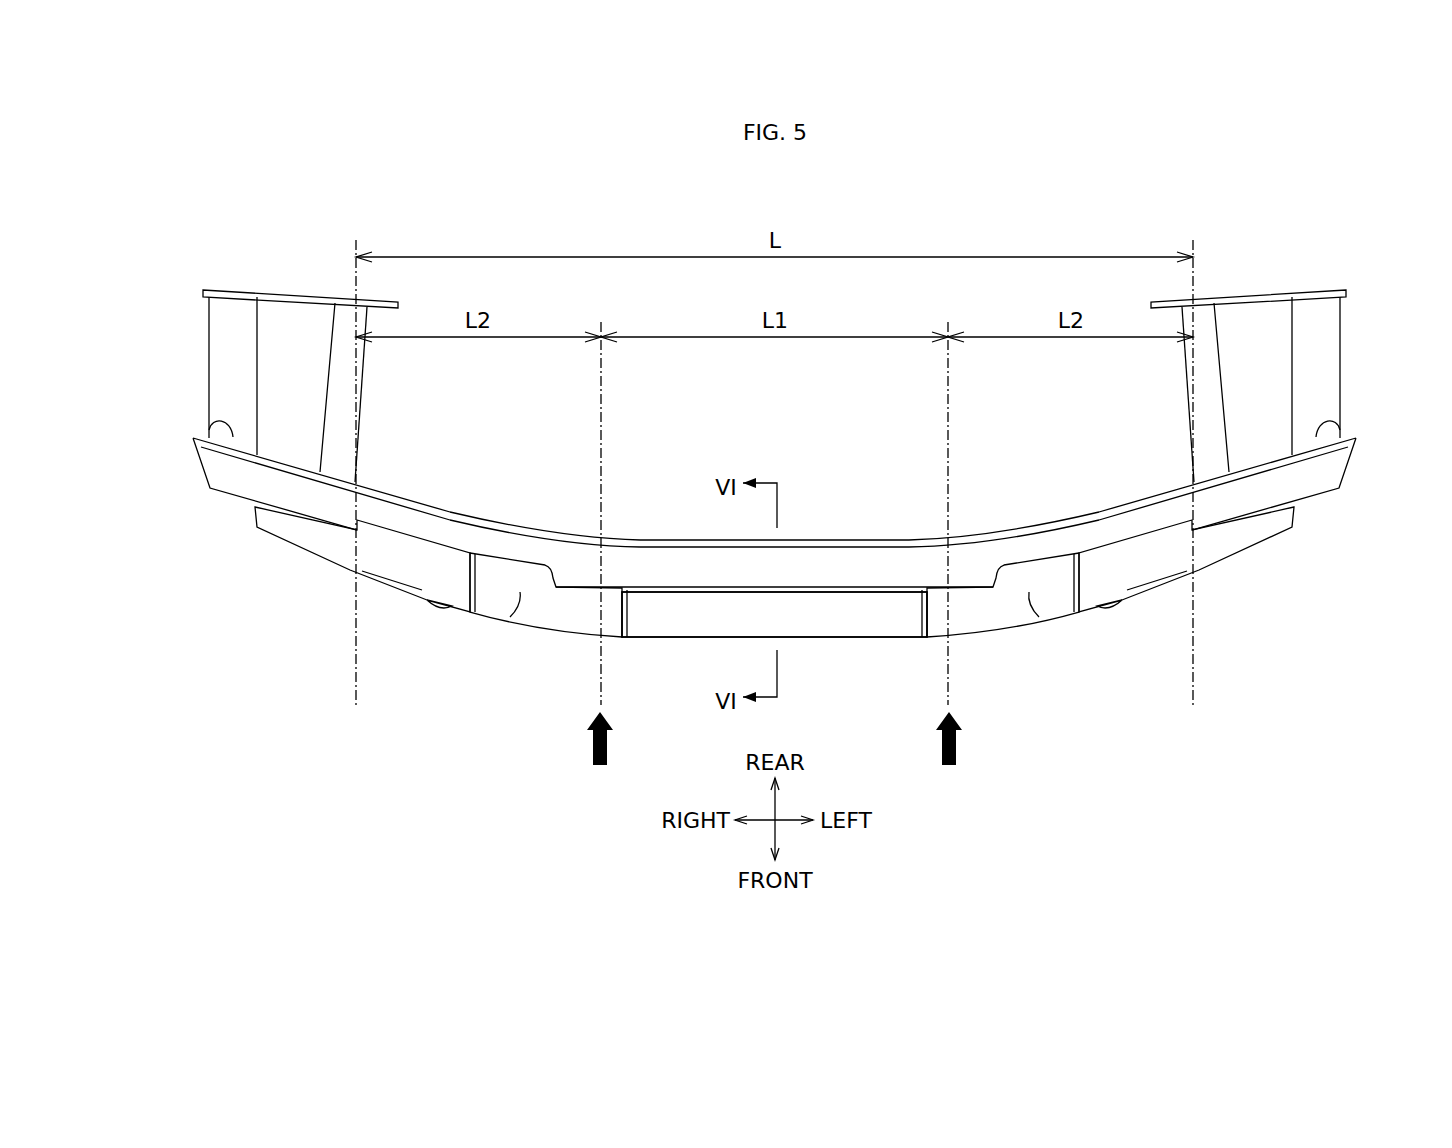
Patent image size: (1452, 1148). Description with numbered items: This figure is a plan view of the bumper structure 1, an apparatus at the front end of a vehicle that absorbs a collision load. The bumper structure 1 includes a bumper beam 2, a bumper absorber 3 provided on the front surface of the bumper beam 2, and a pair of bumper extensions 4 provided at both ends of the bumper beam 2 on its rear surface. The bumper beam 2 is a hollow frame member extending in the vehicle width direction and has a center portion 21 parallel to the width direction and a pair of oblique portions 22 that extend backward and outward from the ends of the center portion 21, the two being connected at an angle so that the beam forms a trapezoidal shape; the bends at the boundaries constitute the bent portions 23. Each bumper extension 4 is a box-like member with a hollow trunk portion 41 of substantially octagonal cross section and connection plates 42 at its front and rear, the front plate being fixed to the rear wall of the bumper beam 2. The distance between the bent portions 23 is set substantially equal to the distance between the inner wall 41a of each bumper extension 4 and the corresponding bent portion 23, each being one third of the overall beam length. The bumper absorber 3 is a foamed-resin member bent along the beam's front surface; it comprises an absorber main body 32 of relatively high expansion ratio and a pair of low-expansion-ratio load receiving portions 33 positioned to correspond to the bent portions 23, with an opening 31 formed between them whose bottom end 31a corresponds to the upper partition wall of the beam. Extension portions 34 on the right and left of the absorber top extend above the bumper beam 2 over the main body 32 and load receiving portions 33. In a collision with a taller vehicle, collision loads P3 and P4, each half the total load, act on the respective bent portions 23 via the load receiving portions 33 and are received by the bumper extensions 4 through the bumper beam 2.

The bumper structure 1 is at (776, 454).
The bumper beam 2 is at (774, 512).
The center portion 21 is at (858, 567).
The oblique portion 22 is at (250, 478).
The bent portion 23 is at (598, 570).
The bumper absorber 3 is at (774, 621).
The opening 31 is at (876, 620).
The bottom end 31a is at (774, 614).
The absorber main body 32 is at (335, 552).
The load receiving portion 33 is at (570, 633).
The extension portion 34 is at (517, 595).
The bumper extension 4 is at (776, 358).
The trunk portion 41 is at (235, 394).
The inner wall 41a is at (365, 395).
The connection plate 42 is at (228, 430).
The collision load P3 is at (593, 750).
The collision load P4 is at (956, 750).